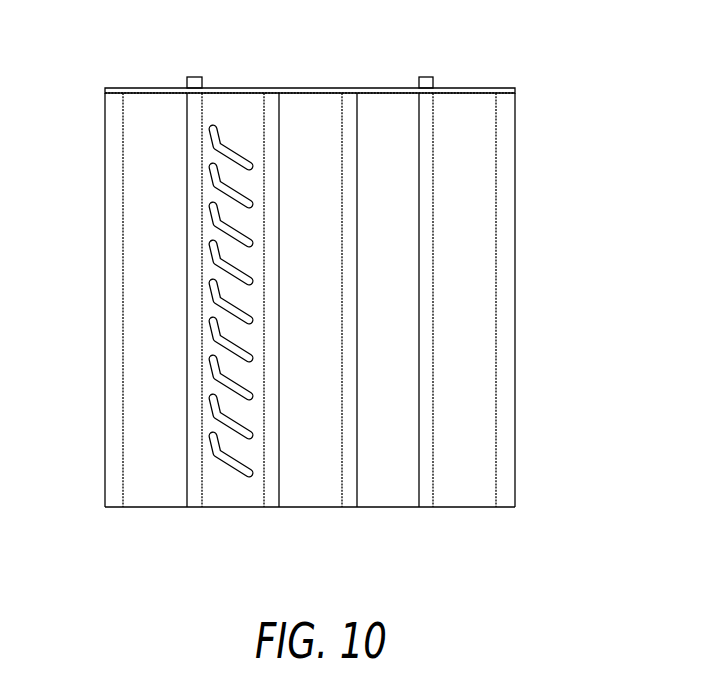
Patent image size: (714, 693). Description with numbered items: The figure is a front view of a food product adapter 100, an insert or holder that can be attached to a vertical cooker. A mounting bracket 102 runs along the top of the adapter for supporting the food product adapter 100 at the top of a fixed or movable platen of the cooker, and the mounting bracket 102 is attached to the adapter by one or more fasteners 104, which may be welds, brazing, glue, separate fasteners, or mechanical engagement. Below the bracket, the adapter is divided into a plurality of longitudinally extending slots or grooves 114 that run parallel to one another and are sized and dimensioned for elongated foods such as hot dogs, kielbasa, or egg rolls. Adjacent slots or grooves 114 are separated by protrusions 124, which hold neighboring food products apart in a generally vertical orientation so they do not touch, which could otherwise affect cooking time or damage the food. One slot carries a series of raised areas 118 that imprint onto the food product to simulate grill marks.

The food product adapter 100 is at (350, 305).
The mounting bracket 102 is at (515, 89).
The fastener 104 is at (198, 82).
The longitudinally extending slot or groove 114 is at (398, 168).
The raised area 118 is at (213, 138).
The protrusion 124 is at (350, 380).